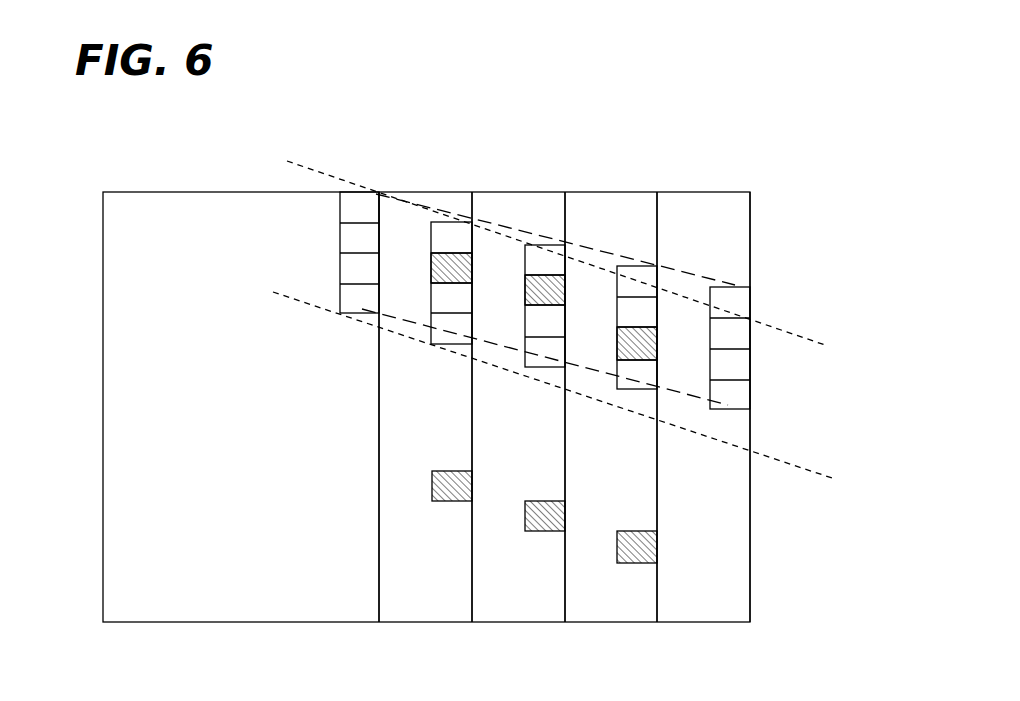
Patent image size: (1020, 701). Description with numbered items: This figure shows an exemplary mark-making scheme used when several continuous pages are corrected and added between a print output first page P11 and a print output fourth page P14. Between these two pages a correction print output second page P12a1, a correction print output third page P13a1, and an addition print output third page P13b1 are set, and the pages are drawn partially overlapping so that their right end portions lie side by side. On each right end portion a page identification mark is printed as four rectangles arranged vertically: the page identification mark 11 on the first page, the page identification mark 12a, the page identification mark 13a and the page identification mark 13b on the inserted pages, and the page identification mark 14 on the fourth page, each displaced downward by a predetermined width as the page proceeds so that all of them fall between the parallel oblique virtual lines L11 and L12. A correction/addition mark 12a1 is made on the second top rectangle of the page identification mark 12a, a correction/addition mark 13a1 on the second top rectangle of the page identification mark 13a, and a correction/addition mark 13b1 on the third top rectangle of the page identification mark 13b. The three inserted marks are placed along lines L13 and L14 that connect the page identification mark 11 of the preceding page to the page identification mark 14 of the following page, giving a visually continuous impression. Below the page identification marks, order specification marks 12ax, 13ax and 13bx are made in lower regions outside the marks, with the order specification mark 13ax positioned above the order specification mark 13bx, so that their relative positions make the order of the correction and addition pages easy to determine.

The print output first page P11 is at (133, 192).
The correction print output second page P12a1 is at (430, 192).
The correction print output third page P13a1 is at (523, 192).
The addition print output third page P13b1 is at (620, 192).
The print output fourth page P14 is at (710, 192).
The page identification mark 11 is at (355, 314).
The page identification mark 12a is at (448, 346).
The correction/addition mark 12a1 is at (430, 267).
The order specification mark 12ax is at (433, 492).
The page identification mark 13a is at (540, 370).
The correction/addition mark 13a1 is at (524, 290).
The order specification mark 13ax is at (526, 524).
The page identification mark 13b is at (634, 392).
The correction/addition mark 13b1 is at (616, 345).
The order specification mark 13bx is at (618, 554).
The page identification mark 14 is at (736, 410).
The virtual line L11 is at (797, 336).
The virtual line L12 is at (783, 462).
The line L13 is at (690, 273).
The line L14 is at (685, 393).